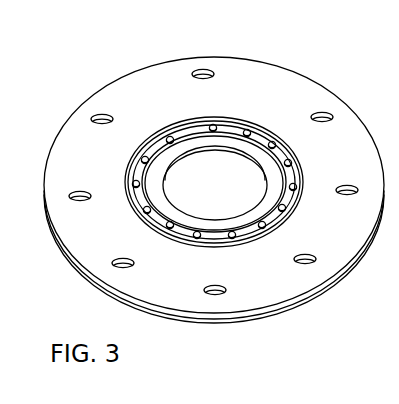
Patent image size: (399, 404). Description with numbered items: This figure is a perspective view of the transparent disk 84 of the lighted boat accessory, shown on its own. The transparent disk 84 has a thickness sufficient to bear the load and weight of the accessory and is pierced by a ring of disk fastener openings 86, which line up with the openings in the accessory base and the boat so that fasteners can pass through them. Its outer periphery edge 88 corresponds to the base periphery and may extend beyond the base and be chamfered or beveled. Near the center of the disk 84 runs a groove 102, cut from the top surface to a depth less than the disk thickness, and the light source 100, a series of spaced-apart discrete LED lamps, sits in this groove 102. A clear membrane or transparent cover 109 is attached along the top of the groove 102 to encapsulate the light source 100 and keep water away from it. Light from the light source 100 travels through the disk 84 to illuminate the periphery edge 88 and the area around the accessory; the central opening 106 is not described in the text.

The transparent disk 84 is at (157, 96).
The disk fastener openings 86 is at (213, 71).
The outer periphery edge 88 is at (222, 318).
The light source 100 is at (271, 142).
The groove 102 is at (304, 171).
The transparent cover 109 is at (291, 203).
The central bore 106 is at (196, 157).